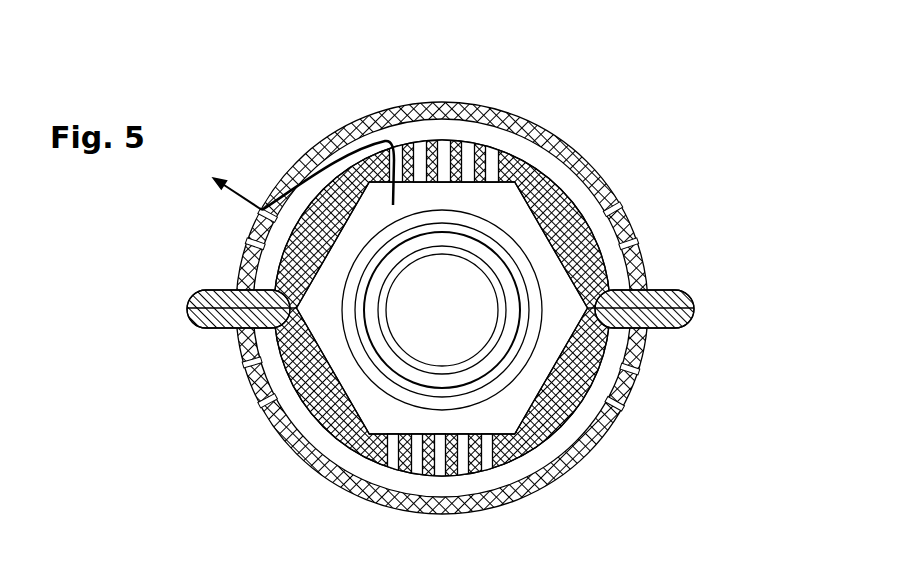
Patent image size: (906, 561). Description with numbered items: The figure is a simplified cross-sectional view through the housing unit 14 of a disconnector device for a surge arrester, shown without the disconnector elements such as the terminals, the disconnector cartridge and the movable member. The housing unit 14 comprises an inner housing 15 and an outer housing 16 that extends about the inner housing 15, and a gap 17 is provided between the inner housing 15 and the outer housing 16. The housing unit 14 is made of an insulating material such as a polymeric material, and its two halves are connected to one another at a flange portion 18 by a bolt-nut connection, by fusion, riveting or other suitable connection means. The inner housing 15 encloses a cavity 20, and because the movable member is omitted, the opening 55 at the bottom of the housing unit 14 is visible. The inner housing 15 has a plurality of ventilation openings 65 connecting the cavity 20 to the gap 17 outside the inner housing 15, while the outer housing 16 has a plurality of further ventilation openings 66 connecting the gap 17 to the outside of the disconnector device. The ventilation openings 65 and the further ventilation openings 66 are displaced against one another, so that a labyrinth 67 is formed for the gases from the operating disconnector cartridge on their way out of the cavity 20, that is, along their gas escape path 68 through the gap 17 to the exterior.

The housing unit 14 is at (606, 154).
The inner housing 15 is at (543, 193).
The outer housing 16 is at (610, 193).
The gap 17 is at (451, 120).
The flange portion 18 is at (668, 318).
The cavity 20 is at (367, 398).
The opening 55 is at (420, 320).
The ventilation openings 65 is at (487, 162).
The further ventilation openings 66 is at (638, 208).
The labyrinth 67 is at (248, 201).
The gas escape path 68 is at (237, 194).